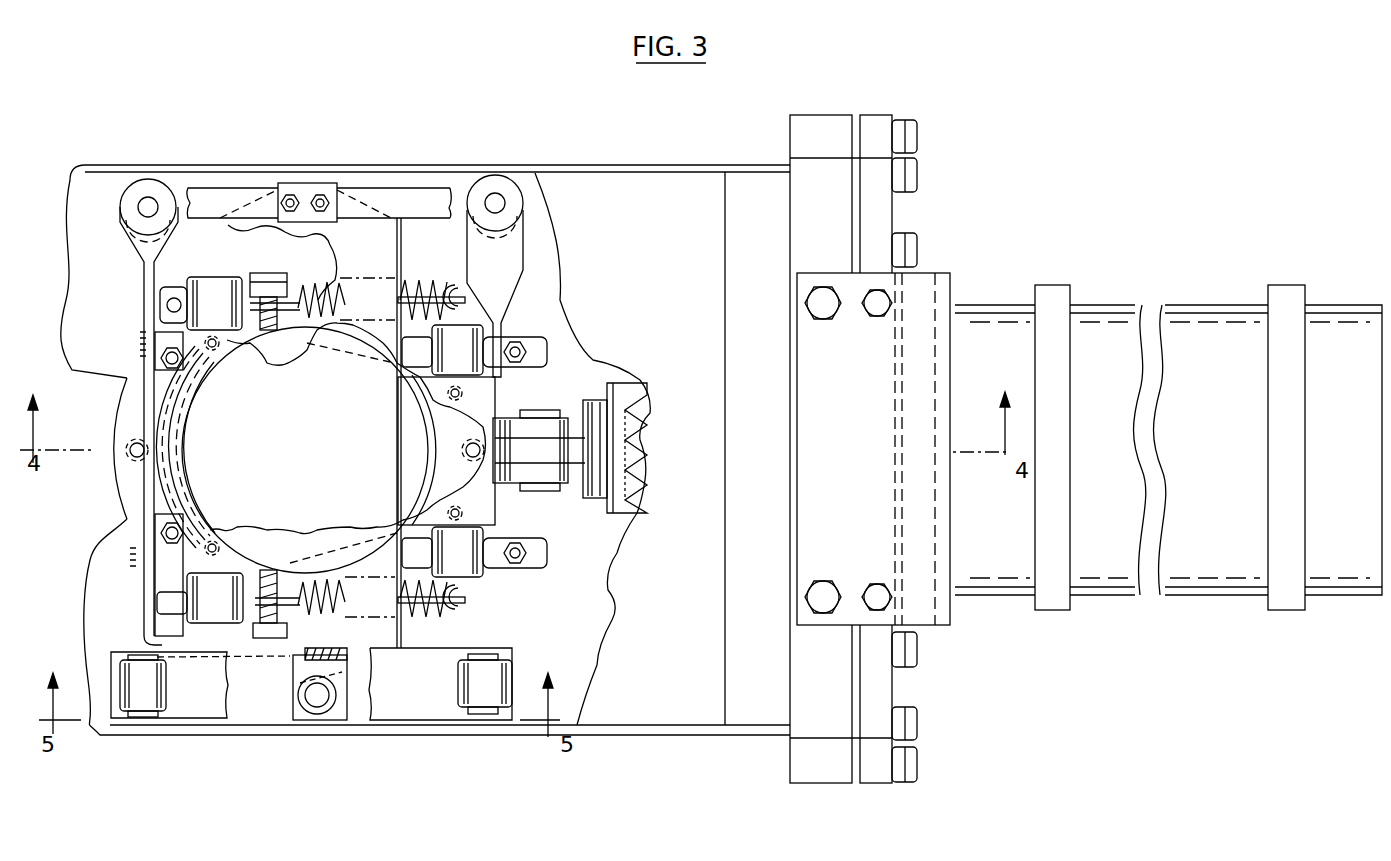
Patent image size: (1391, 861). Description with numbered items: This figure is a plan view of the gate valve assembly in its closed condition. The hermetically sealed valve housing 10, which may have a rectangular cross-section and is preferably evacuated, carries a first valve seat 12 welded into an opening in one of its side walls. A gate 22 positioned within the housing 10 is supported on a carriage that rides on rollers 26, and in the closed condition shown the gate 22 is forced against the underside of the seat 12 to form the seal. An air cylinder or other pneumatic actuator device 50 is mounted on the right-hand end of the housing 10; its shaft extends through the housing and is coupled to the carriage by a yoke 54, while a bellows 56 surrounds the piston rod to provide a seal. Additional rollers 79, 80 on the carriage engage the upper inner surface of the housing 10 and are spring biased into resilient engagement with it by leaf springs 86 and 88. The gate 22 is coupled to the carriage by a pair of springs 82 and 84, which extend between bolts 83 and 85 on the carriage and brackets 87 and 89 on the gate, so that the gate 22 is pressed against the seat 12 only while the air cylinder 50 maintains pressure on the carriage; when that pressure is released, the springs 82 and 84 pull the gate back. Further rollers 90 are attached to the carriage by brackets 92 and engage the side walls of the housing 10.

The valve housing 10 is at (605, 196).
The first valve seat 12 is at (375, 342).
The gate 22 is at (237, 405).
The rollers 26 is at (213, 293).
The pneumatic actuator device 50 is at (1178, 550).
The yoke 54 is at (541, 430).
The bellows 56 is at (628, 455).
The roller 79 is at (488, 688).
The roller 80 is at (148, 688).
The spring 82 is at (330, 608).
The bolt 83 is at (270, 627).
The spring 84 is at (302, 280).
The bolt 85 is at (262, 283).
The leaf spring 86 is at (385, 197).
The bracket 87 is at (460, 593).
The leaf spring 88 is at (212, 198).
The bracket 89 is at (448, 288).
The rollers 90 is at (148, 190).
The brackets 92 is at (148, 293).